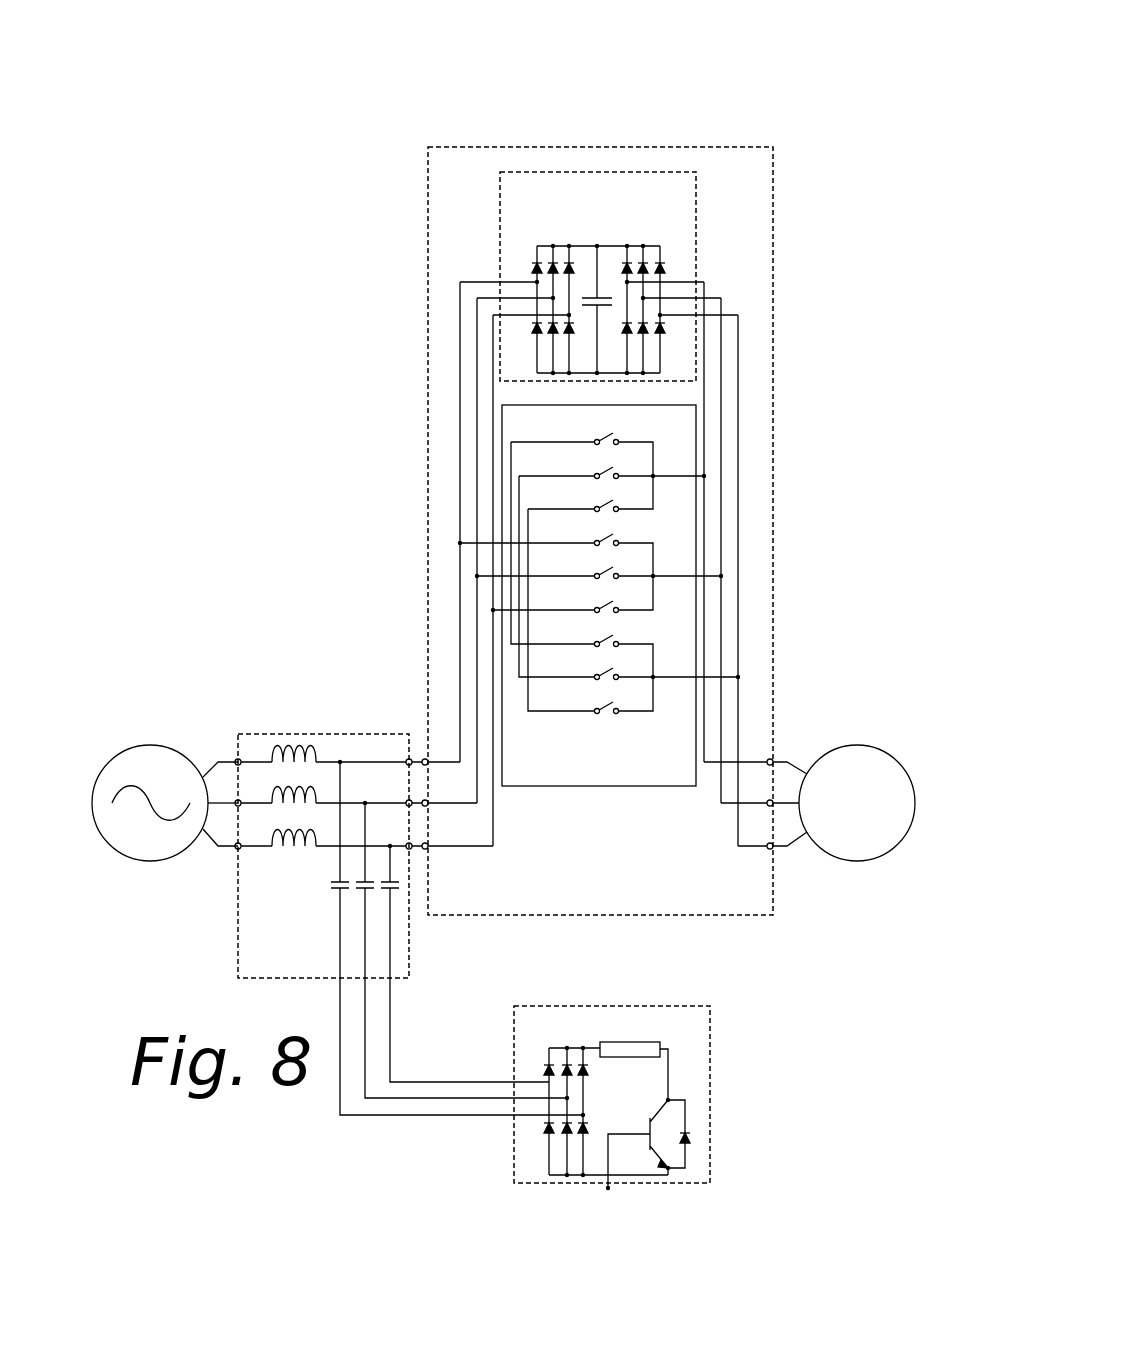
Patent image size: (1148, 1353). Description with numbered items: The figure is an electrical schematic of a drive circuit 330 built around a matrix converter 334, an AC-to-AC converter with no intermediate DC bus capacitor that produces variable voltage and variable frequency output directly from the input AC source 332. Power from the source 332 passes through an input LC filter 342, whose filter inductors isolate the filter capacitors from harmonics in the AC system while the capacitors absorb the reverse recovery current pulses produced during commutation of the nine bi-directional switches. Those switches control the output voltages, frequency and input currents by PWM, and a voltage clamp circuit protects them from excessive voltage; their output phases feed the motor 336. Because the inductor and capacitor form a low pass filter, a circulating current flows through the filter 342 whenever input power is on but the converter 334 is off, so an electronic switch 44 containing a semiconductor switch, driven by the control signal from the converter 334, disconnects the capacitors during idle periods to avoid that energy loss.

The drive circuit 330 is at (671, 471).
The input AC source 332 is at (150, 743).
The matrix converter 334 is at (775, 218).
The induction motor 336 is at (867, 747).
The input LC filter 342 is at (307, 733).
The electronic switch 44 is at (710, 1085).